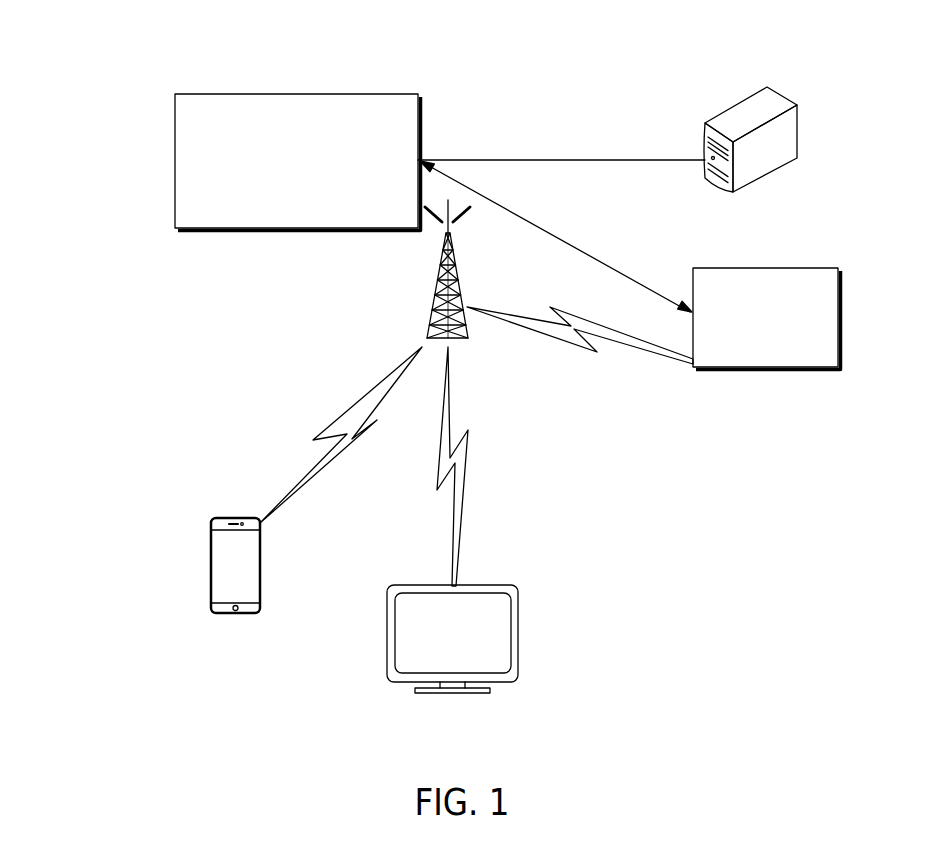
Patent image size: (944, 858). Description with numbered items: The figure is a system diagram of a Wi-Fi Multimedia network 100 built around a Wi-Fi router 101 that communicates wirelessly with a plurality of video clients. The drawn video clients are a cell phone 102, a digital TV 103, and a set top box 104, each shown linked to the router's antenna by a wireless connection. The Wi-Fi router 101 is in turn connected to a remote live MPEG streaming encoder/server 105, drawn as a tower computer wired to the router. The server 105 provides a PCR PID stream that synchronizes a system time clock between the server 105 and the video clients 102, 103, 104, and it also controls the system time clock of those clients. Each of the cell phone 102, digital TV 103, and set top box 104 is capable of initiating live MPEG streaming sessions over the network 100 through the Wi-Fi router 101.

The network 100 is at (118, 56).
The Wi-Fi router 101 is at (175, 160).
The cell phone 102 is at (235, 614).
The digital TV 103 is at (519, 632).
The set top box 104 is at (762, 369).
The remote live MPEG streaming encoder/server 105 is at (763, 176).